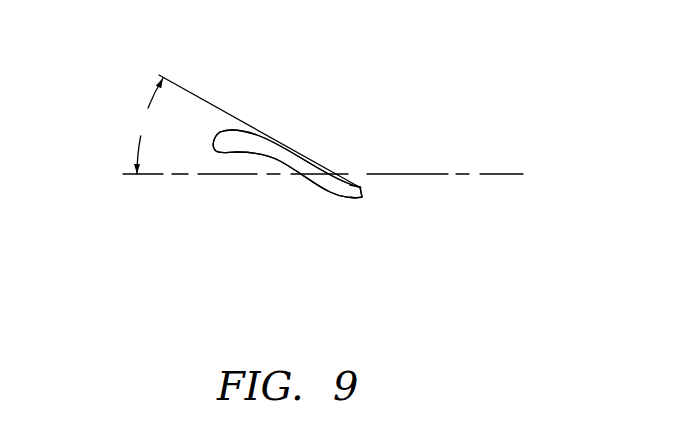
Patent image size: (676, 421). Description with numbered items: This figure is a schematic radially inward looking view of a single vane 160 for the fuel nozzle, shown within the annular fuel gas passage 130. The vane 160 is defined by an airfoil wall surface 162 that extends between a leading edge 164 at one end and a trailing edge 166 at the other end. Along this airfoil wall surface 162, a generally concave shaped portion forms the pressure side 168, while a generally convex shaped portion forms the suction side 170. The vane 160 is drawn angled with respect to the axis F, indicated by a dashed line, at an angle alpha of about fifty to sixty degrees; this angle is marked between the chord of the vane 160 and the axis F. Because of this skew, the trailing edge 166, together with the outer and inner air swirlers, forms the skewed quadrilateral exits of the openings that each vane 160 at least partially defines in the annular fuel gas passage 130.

The annular fuel gas passage 130 is at (98, 80).
The vane 160 is at (323, 131).
The airfoil wall surface 162 is at (285, 132).
The leading edge 164 is at (213, 143).
The trailing edge 166 is at (363, 192).
The pressure side 168 is at (267, 155).
The suction side 170 is at (266, 134).
The axis F is at (486, 174).